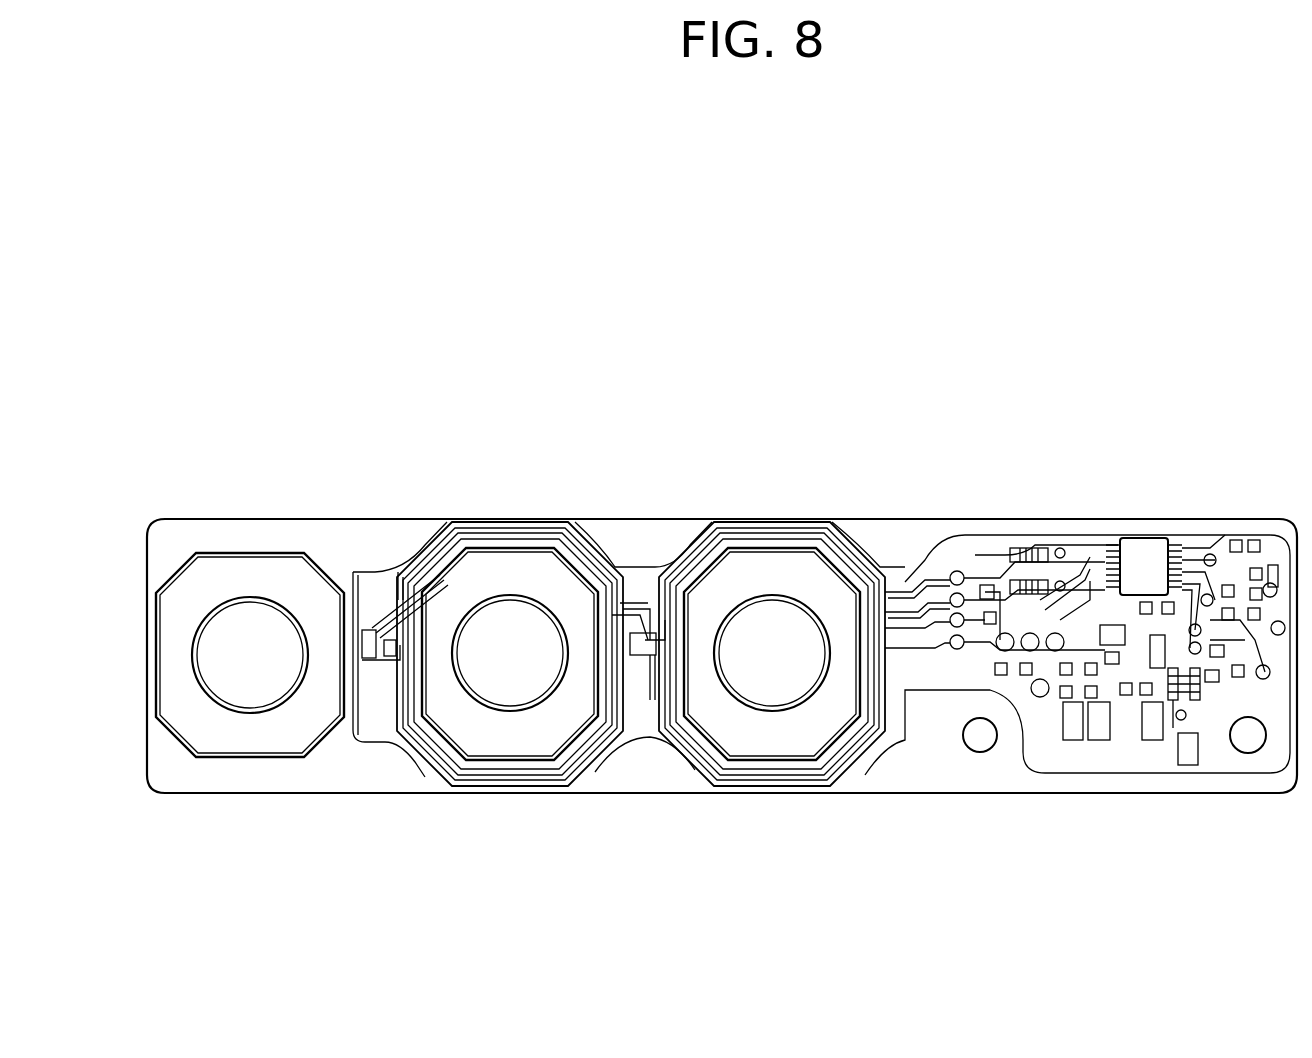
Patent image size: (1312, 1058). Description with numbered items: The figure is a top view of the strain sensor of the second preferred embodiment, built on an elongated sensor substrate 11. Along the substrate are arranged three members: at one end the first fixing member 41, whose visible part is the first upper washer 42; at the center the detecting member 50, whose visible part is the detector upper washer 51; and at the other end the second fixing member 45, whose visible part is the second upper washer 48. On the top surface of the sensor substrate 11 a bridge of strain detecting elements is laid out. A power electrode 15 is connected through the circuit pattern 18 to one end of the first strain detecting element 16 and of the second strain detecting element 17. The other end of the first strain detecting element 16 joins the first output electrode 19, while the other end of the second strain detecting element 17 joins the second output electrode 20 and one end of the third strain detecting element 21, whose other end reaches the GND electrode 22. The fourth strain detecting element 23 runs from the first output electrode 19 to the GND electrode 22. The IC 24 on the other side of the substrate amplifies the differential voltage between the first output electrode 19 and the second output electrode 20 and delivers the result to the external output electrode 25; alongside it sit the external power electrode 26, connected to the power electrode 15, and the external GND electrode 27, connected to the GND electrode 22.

The sensor substrate 11 is at (220, 535).
The power electrode 15 is at (952, 655).
The first strain detecting element 16 is at (651, 590).
The second strain detecting element 17 is at (398, 615).
The circuit pattern 18 is at (560, 772).
The first output electrode 19 is at (935, 690).
The second output electrode 20 is at (955, 572).
The third strain detecting element 21 is at (360, 580).
The GND electrode 22 is at (940, 575).
The fourth strain detecting element 23 is at (608, 590).
The IC 24 is at (1142, 548).
The external output electrode 25 is at (1152, 735).
The external power electrode 26 is at (1072, 735).
The external GND electrode 27 is at (1103, 735).
The first fixing member 41 is at (245, 745).
The first upper washer 42 is at (193, 735).
The second fixing member 45 is at (782, 745).
The second upper washer 48 is at (722, 735).
The detecting member 50 is at (500, 745).
The detector upper washer 51 is at (450, 725).